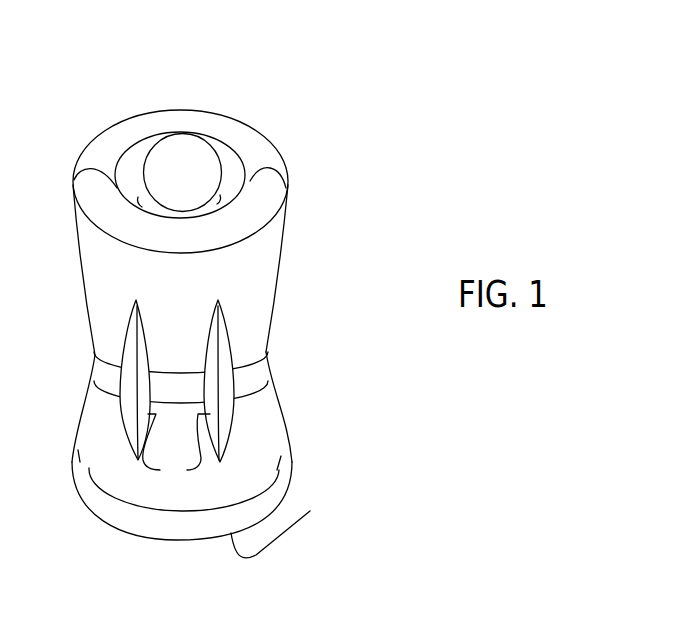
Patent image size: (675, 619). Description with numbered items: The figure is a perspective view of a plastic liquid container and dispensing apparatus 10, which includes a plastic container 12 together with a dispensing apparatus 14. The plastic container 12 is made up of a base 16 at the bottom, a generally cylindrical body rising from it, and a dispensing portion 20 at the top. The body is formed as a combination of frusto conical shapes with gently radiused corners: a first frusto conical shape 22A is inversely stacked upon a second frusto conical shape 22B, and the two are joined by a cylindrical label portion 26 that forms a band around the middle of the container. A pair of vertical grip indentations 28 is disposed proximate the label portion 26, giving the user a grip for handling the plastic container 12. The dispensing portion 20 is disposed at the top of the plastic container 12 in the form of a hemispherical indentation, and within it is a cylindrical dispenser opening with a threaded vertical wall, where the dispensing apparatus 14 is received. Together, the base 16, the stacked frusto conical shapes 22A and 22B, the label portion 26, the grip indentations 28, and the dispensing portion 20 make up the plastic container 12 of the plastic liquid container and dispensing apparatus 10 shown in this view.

The plastic liquid container and dispensing apparatus 10 is at (279, 136).
The plastic container 12 is at (255, 262).
The dispensing apparatus 14 is at (147, 163).
The base 16 is at (310, 511).
The dispensing portion 20 is at (232, 166).
The first frusto conical shape 22A is at (294, 218).
The second frusto conical shape 22B is at (272, 442).
The cylindrical label portion 26 is at (262, 368).
The vertical grip indentations 28 is at (177, 394).